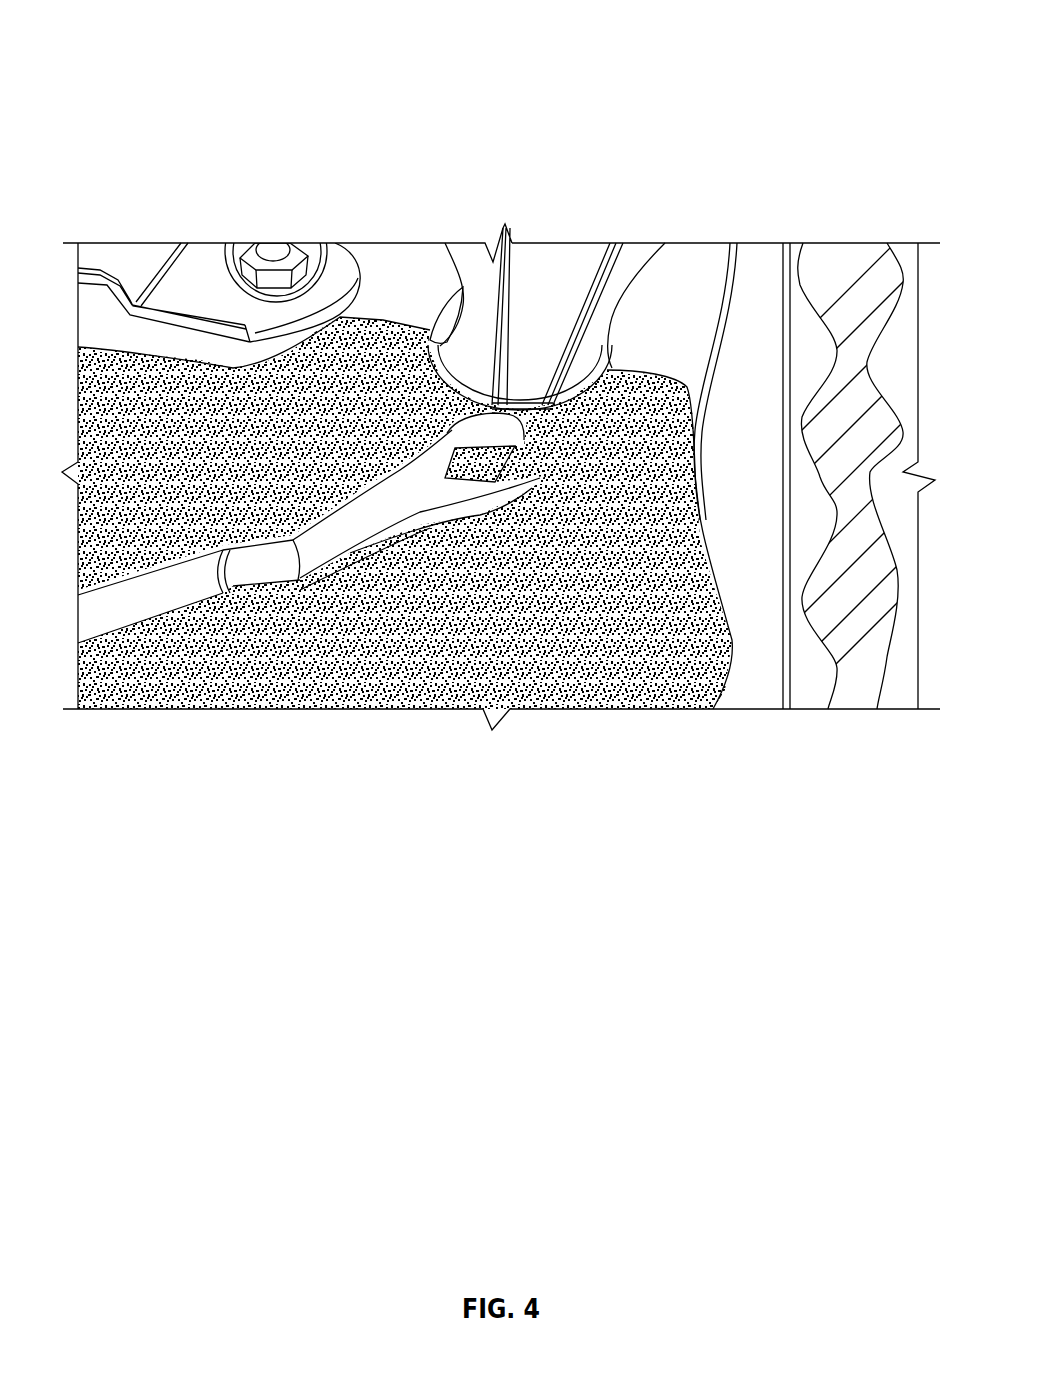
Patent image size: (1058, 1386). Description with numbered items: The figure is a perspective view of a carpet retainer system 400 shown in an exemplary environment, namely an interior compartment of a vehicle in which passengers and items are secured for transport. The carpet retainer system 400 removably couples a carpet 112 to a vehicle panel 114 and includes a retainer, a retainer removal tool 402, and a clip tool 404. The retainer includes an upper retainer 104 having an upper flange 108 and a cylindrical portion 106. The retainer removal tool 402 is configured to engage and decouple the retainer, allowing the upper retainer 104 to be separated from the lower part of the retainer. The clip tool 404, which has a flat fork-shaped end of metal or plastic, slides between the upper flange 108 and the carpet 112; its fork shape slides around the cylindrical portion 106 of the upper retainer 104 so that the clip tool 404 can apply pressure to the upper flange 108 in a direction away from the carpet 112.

The carpet retainer system 400 is at (840, 80).
The retainer removal tool 402 is at (548, 270).
The clip tool 404 is at (418, 487).
The upper retainer 104 is at (528, 432).
The cylindrical portion 106 is at (518, 425).
The upper flange 108 is at (478, 432).
The carpet 112 is at (213, 475).
The vehicle panel 114 is at (691, 339).